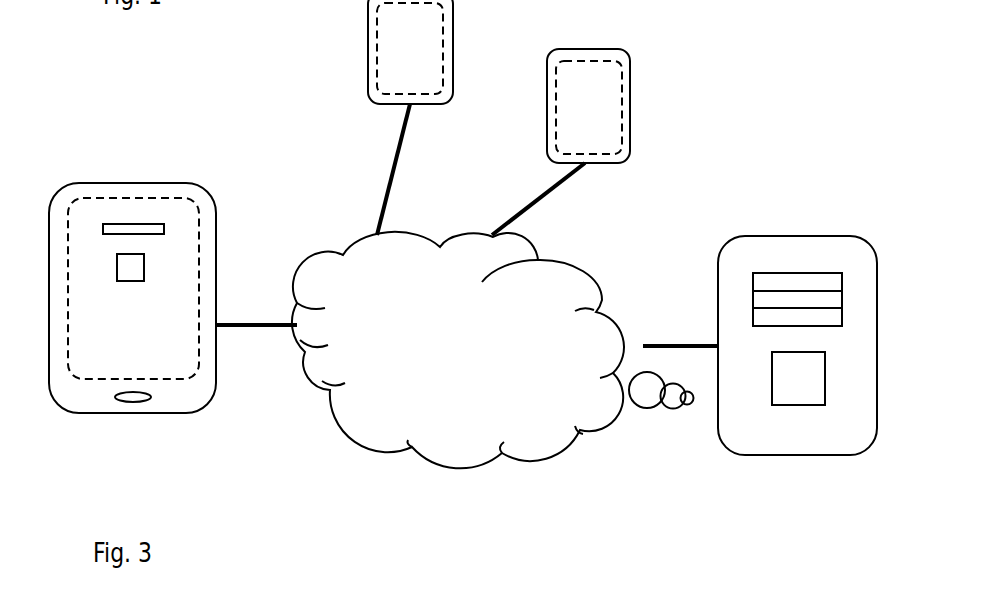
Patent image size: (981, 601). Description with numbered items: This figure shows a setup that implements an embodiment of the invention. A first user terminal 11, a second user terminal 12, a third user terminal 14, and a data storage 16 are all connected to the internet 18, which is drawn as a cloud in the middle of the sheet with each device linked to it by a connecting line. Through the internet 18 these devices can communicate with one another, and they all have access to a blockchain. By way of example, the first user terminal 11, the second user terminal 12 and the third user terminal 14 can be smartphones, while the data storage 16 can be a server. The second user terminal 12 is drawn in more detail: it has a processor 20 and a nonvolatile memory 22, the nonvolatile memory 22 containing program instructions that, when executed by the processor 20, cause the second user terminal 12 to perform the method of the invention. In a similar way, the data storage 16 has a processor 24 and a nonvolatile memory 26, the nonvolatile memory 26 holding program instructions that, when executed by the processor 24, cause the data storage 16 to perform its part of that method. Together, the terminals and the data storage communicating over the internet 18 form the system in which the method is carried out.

The first user terminal 11 is at (368, 80).
The second user terminal 12 is at (112, 183).
The third user terminal 14 is at (630, 125).
The data storage 16 is at (838, 236).
The internet 18 is at (493, 350).
The processor 20 is at (145, 272).
The nonvolatile memory 22 is at (126, 223).
The processor 24 is at (770, 368).
The nonvolatile memory 26 is at (805, 273).